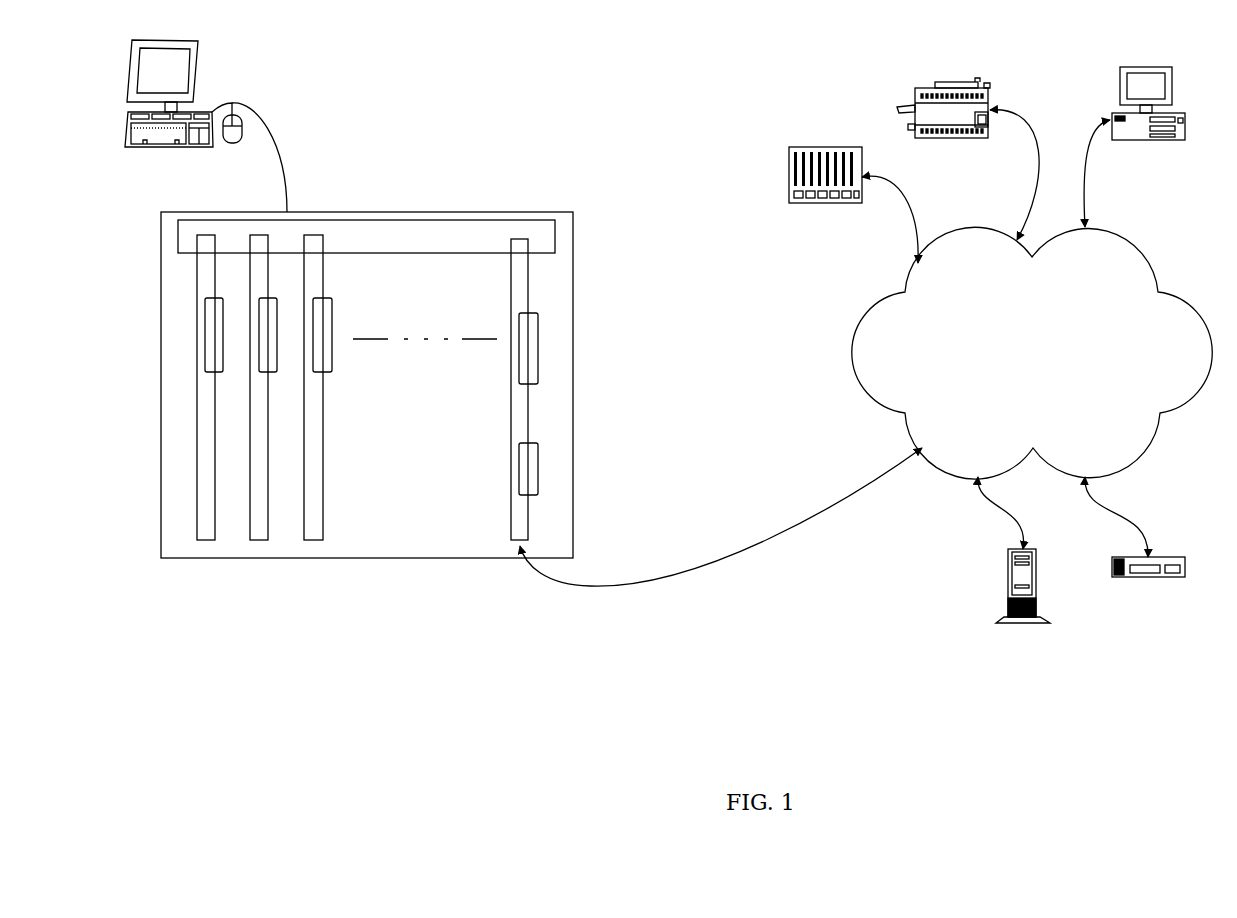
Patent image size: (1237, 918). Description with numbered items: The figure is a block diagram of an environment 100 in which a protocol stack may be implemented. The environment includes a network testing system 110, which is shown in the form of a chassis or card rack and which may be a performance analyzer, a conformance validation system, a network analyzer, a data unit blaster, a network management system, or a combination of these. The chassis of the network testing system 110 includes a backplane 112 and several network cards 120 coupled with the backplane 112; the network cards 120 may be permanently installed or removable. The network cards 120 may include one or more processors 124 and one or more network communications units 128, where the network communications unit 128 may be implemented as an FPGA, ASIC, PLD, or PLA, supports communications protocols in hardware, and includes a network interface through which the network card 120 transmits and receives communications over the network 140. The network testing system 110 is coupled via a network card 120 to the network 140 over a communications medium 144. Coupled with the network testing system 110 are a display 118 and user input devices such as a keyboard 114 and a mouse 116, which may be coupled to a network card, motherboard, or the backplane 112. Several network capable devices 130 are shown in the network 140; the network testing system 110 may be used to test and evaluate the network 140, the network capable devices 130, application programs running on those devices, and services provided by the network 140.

The environment 100 is at (678, 80).
The network testing system 110 is at (470, 421).
The backplane 112 is at (367, 237).
The keyboard 114 is at (128, 130).
The mouse 116 is at (232, 143).
The display 118 is at (130, 72).
The network cards 120 is at (178, 520).
The processor 124 is at (538, 347).
The network communications unit 128 is at (538, 470).
The network capable devices 130 is at (987, 373).
The network 140 is at (1032, 353).
The communications medium 144 is at (660, 587).